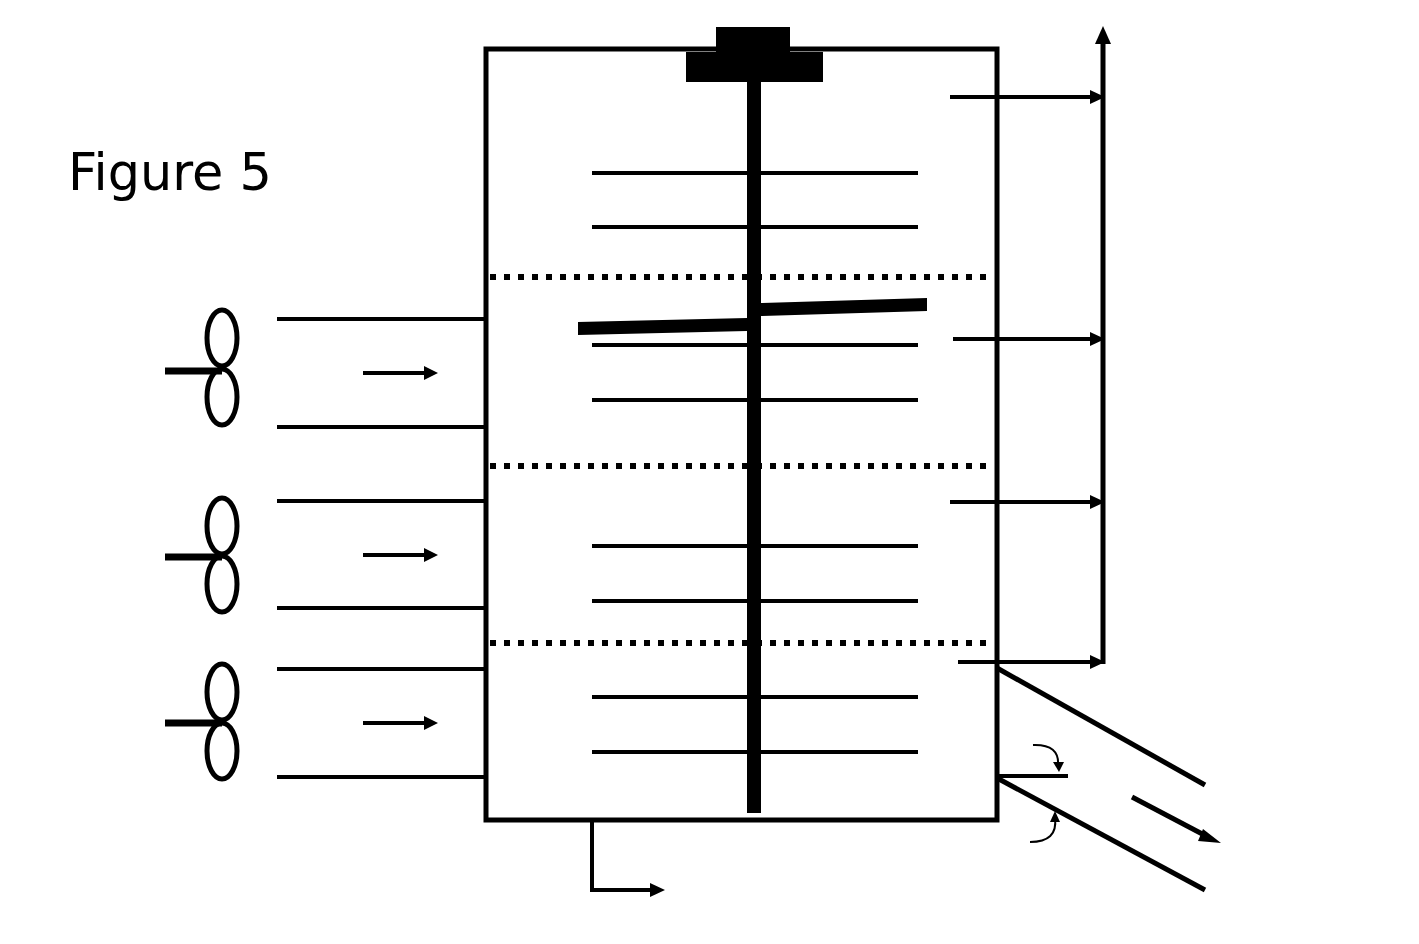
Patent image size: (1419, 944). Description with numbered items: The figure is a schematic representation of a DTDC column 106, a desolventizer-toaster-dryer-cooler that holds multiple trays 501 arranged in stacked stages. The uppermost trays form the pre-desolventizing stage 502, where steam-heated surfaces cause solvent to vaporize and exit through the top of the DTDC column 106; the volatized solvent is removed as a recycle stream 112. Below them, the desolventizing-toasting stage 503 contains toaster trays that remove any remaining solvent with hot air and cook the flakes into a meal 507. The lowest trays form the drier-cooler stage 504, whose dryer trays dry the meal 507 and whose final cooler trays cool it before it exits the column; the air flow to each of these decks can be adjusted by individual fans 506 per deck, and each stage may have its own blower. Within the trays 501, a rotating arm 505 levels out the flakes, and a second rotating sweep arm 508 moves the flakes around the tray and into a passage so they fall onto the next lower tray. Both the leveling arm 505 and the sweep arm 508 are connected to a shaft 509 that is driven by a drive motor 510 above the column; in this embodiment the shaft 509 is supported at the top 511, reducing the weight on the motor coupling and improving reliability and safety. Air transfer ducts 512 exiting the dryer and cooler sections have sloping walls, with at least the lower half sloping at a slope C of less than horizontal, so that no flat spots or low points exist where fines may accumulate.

The DTDC column 106 is at (637, 431).
The recycle stream 112 is at (1053, 347).
The trays 501 is at (755, 462).
The pre-desolventizing stage 502 is at (696, 228).
The desolventizing-toasting stage 503 is at (691, 548).
The drier-cooler stage 504 is at (500, 801).
The rotating arm 505 is at (870, 306).
The fans 506 is at (173, 544).
The meal 507 is at (653, 863).
The sweep arm 508 is at (636, 326).
The shaft 509 is at (719, 446).
The drive motor 510 is at (730, 36).
The top support 511 is at (775, 67).
The air transfer ducts 512 is at (1199, 779).